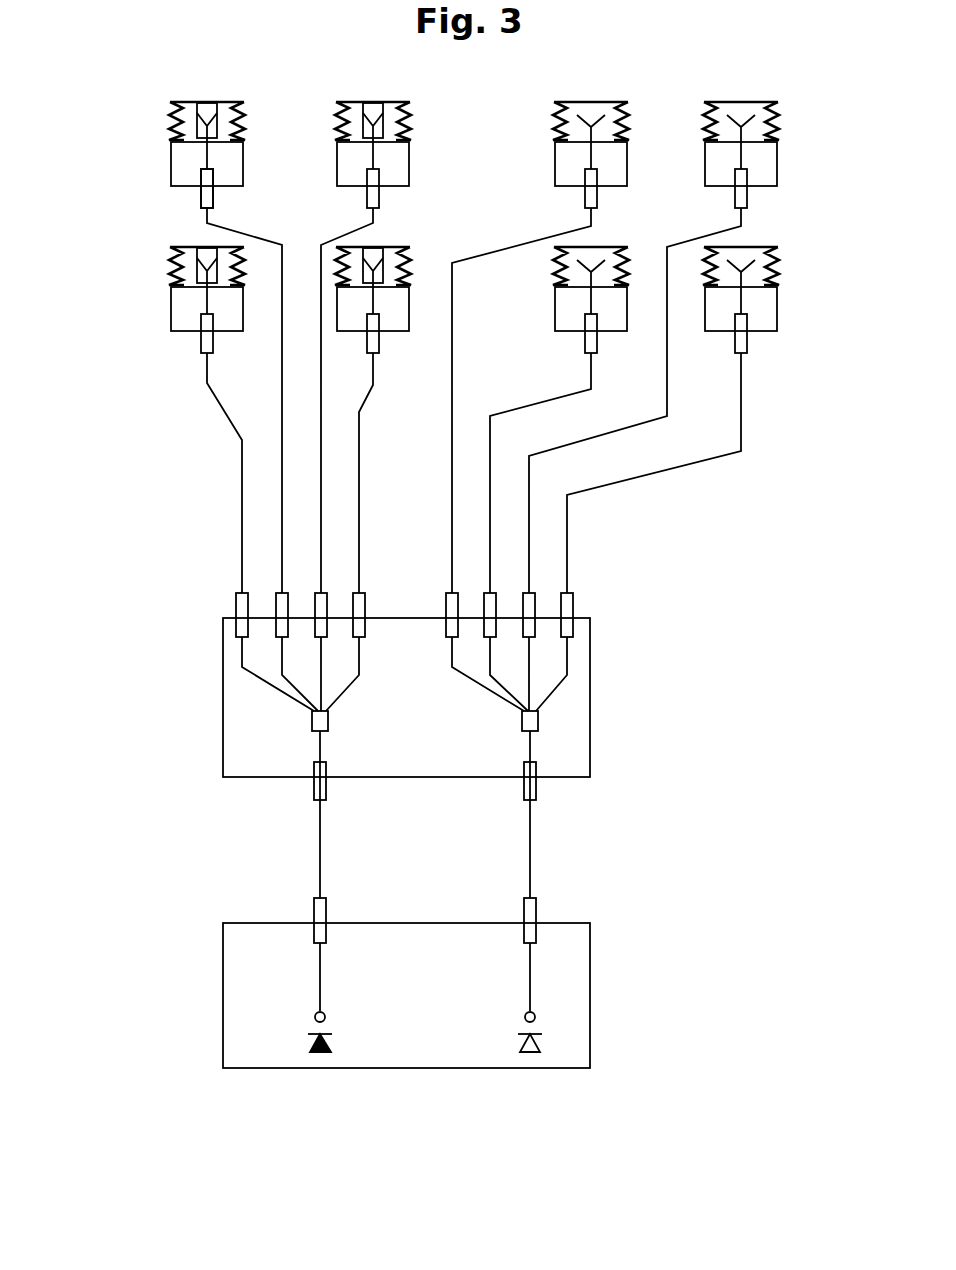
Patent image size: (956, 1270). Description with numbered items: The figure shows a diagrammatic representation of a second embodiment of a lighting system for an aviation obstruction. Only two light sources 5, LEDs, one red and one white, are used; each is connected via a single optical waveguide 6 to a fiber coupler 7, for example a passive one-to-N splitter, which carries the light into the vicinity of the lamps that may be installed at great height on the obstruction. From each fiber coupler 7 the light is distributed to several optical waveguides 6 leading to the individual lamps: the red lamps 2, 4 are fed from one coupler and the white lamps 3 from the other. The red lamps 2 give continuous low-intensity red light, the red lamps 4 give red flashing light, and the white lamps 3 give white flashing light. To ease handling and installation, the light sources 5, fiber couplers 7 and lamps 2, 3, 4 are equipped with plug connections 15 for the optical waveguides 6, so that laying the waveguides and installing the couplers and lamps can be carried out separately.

The lamp 2 is at (295, 227).
The lamp 4 is at (164, 178).
The lamp 3 is at (625, 249).
The plug connection 15 is at (220, 198).
The optical waveguide 6 is at (282, 497).
The fiber coupler 7 is at (311, 721).
The light source 5 is at (318, 1054).